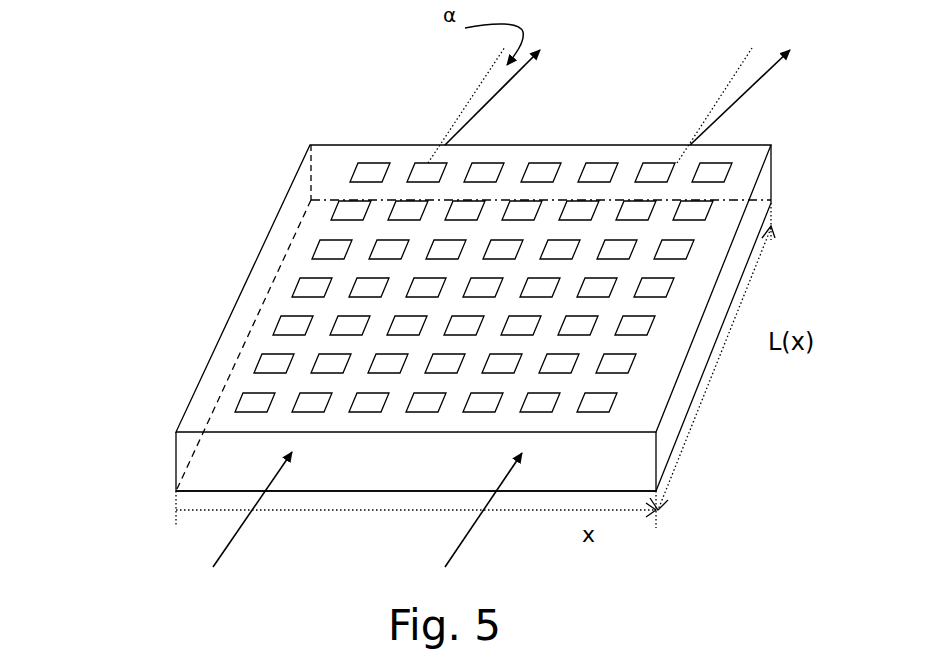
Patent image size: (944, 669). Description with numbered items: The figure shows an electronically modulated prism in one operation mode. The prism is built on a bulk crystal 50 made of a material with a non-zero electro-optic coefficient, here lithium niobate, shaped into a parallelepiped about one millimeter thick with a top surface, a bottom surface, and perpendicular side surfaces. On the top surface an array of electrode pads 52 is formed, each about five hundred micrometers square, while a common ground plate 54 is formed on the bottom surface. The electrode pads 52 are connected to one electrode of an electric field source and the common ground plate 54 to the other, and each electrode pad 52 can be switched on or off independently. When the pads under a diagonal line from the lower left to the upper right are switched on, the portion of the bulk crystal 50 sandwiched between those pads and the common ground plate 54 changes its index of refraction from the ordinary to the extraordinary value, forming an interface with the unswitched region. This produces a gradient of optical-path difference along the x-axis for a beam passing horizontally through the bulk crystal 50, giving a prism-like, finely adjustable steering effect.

The bulk crystal 50 is at (236, 298).
The electrode pads 52 is at (367, 163).
The common ground plate 54 is at (233, 492).